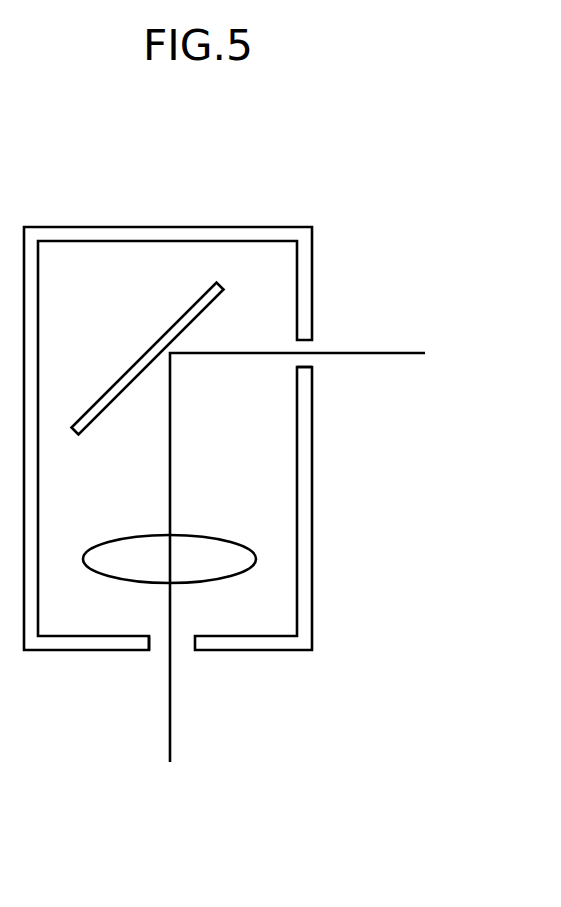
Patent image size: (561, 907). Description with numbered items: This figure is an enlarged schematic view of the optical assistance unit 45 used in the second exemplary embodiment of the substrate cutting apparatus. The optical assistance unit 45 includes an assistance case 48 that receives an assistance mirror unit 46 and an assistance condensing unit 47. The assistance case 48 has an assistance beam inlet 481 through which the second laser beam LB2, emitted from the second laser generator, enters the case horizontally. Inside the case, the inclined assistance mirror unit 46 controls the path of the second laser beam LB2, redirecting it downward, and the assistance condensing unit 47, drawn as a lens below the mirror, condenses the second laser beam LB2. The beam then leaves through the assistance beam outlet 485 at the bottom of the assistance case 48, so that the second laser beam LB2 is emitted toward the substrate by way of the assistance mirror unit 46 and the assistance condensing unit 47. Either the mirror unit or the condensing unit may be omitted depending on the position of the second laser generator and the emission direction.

The optical assistance unit 45 is at (151, 225).
The assistance mirror unit 46 is at (130, 367).
The assistance condensing unit 47 is at (256, 557).
The assistance case 48 is at (313, 247).
The assistance beam inlet 481 is at (302, 367).
The assistance beam outlet 485 is at (150, 643).
The second laser beam LB2 is at (398, 352).